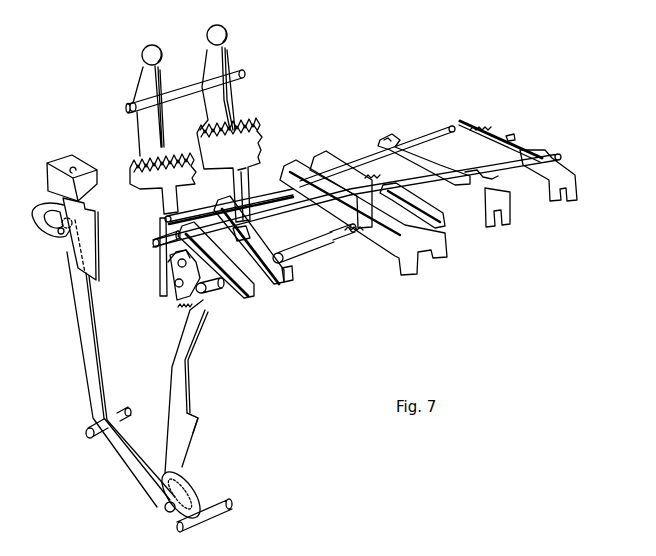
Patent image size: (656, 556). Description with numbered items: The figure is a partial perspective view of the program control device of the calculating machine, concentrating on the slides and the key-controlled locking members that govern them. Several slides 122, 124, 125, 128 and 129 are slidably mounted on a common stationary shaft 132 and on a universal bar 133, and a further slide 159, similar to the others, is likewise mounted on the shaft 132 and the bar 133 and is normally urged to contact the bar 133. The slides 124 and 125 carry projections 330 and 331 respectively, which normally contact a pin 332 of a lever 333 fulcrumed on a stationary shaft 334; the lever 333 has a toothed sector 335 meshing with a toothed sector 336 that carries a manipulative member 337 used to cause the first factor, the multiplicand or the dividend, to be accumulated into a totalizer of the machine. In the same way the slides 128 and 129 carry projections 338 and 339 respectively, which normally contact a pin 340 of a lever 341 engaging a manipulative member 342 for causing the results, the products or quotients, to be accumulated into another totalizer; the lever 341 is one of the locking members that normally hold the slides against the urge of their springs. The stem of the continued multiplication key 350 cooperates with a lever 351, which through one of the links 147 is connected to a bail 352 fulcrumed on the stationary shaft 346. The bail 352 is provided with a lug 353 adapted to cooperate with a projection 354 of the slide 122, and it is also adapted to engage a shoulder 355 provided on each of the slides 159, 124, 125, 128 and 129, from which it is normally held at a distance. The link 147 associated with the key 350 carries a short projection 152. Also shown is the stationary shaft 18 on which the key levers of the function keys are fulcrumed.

The stationary shaft 18 is at (90, 425).
The slide 122 is at (385, 137).
The slide 124 is at (318, 156).
The slide 125 is at (287, 167).
The slide 128 is at (278, 282).
The slide 129 is at (240, 294).
The stationary shaft 132 is at (412, 138).
The universal bar 133 is at (526, 178).
The link 147 is at (183, 391).
The short projection 152 is at (193, 427).
The slide 159 is at (525, 156).
The projection 330 is at (318, 232).
The projection 331 is at (288, 272).
The pin 332 is at (300, 254).
The lever 333 is at (242, 233).
The stationary shaft 334 is at (228, 212).
The toothed sector 335 is at (250, 168).
The toothed sector 336 is at (248, 125).
The manipulative member 337 is at (228, 36).
The projection 338 is at (208, 293).
The projection 339 is at (162, 299).
The pin 340 is at (181, 302).
The lever 341 is at (162, 207).
The manipulative member 342 is at (162, 57).
The stationary shaft 346 is at (511, 137).
The continued multiplication key 350 is at (57, 163).
The lever 351 is at (98, 368).
The bail 352 is at (178, 266).
The lug 353 is at (443, 208).
The projection 354 is at (370, 176).
The shoulder 355 is at (180, 254).